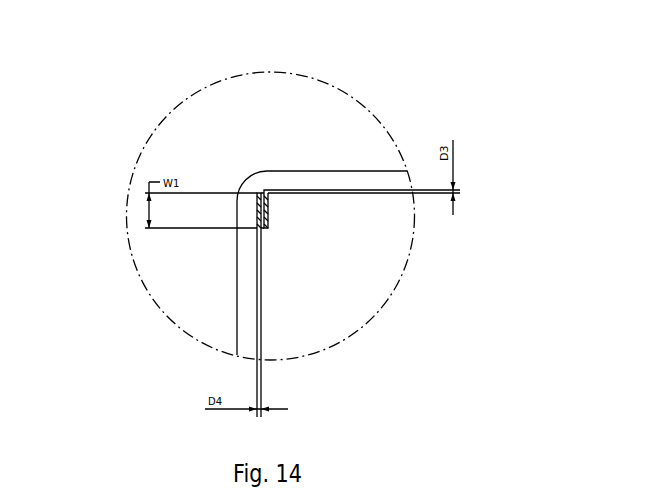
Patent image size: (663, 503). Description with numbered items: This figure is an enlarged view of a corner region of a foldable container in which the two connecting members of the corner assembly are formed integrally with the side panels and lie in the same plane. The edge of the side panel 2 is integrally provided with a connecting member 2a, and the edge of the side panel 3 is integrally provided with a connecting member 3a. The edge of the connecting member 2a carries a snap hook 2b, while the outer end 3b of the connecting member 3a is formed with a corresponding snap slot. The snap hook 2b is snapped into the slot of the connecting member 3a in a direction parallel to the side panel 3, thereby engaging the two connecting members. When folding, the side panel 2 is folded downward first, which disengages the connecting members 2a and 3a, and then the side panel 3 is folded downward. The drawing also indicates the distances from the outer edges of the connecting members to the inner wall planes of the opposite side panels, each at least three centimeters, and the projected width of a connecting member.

The side panel 2 is at (330, 180).
The connecting member 2a is at (243, 217).
The snap hook 2b is at (262, 212).
The side panel 3 is at (250, 263).
The connecting member 3a is at (252, 213).
The outer end of connecting member 3b is at (265, 196).